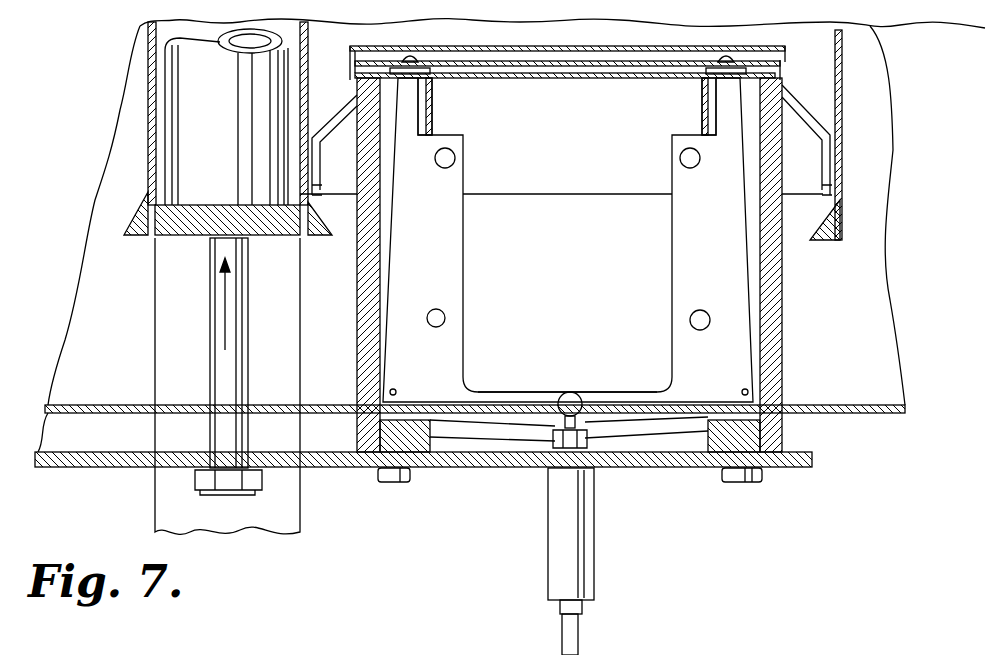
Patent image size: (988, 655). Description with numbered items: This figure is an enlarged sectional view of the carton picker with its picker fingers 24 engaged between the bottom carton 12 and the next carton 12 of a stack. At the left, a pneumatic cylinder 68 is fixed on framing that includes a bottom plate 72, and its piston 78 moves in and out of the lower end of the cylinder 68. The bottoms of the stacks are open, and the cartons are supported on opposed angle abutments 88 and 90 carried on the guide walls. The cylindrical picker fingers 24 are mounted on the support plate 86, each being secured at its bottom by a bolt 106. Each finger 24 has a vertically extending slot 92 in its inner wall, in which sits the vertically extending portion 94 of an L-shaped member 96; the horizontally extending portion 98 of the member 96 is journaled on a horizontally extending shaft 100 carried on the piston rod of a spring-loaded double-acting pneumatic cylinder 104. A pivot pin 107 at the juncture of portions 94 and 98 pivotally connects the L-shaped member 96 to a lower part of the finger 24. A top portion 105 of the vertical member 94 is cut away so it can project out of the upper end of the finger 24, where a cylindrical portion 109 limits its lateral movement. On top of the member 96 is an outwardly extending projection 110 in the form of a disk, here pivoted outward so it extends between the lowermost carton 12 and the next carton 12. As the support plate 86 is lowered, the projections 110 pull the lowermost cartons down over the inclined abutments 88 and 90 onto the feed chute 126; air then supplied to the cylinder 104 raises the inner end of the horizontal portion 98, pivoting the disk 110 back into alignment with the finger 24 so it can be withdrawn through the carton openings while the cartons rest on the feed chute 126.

The carton 12 is at (614, 44).
The picker finger 24 is at (358, 372).
The pneumatic cylinder 68 is at (222, 125).
The bottom plate 72 is at (205, 232).
The piston 78 is at (212, 343).
The support plate 86 is at (638, 467).
The angle abutment 88 is at (325, 228).
The angle abutment 90 is at (815, 232).
The vertically extending slot 92 is at (432, 133).
The vertically extending portion 94 is at (450, 230).
The L-shaped member 96 is at (486, 352).
The horizontally extending portion 98 is at (500, 390).
The horizontally extending shaft 100 is at (572, 393).
The double-acting pneumatic cylinder 104 is at (556, 568).
The top portion 105 is at (420, 112).
The bolt 106 is at (390, 480).
The pivot pin 107 is at (396, 390).
The cylindrical portion 109 is at (706, 88).
The outwardly extending projection 110 is at (398, 58).
The feed chute 126 is at (70, 405).